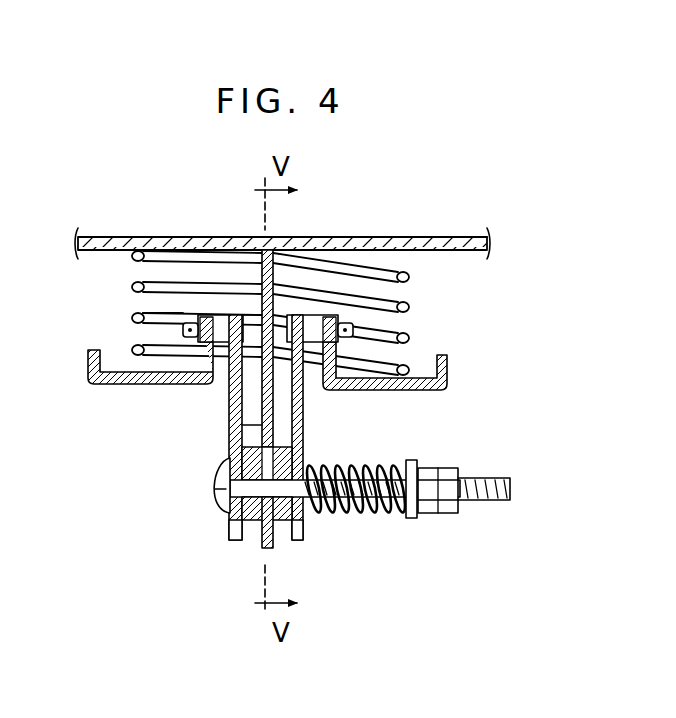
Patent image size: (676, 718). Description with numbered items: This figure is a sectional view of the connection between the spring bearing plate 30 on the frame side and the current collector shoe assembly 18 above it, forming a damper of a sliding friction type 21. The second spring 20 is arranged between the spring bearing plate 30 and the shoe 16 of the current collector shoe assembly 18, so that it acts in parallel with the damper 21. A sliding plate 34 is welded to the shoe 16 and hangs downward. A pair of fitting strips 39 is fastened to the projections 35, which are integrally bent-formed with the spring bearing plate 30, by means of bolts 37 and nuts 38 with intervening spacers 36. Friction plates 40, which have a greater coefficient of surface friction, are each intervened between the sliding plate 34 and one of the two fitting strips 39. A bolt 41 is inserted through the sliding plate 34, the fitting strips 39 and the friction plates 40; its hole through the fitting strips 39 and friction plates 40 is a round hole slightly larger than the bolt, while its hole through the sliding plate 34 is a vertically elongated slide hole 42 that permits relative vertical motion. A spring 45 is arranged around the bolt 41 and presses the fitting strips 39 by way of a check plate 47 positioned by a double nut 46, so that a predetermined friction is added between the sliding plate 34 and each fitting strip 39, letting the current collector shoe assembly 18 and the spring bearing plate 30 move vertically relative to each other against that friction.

The shoe 16 is at (356, 237).
The current collector shoe assembly 18 is at (438, 236).
The second spring 20 is at (410, 306).
The damper of a sliding friction type 21 is at (212, 525).
The spring bearing plate 30 is at (448, 380).
The sliding plate 34 is at (272, 549).
The projections 35 is at (150, 357).
The spacers 36 is at (228, 313).
The bolts 37 is at (243, 313).
The nuts 38 is at (148, 325).
The fitting strips 39 is at (229, 402).
The friction plates 40 is at (235, 541).
The bolt 41 is at (216, 481).
The slide hole 42 is at (240, 432).
The spring 45 is at (365, 514).
The double nut 46 is at (440, 512).
The check plate 47 is at (413, 520).